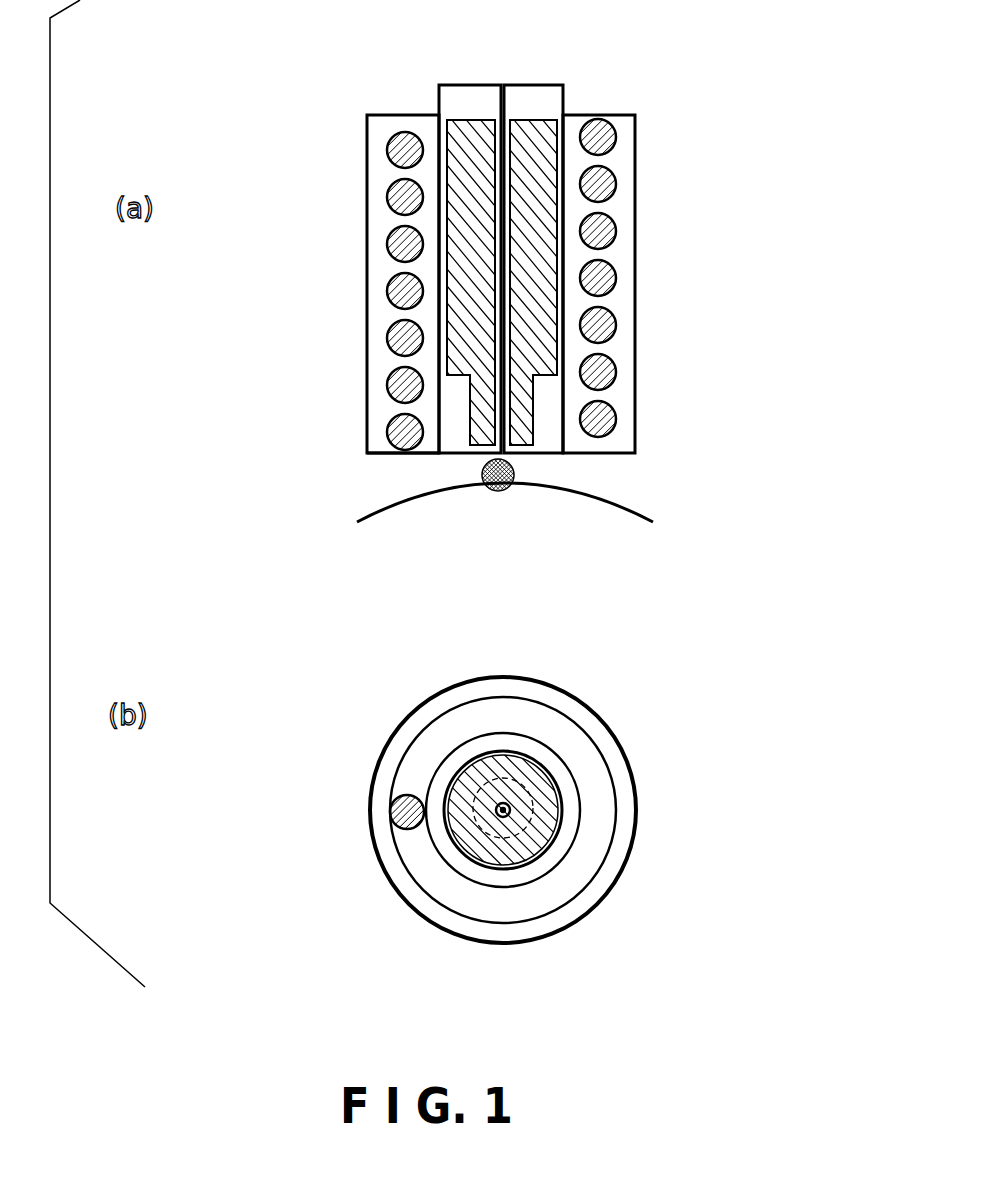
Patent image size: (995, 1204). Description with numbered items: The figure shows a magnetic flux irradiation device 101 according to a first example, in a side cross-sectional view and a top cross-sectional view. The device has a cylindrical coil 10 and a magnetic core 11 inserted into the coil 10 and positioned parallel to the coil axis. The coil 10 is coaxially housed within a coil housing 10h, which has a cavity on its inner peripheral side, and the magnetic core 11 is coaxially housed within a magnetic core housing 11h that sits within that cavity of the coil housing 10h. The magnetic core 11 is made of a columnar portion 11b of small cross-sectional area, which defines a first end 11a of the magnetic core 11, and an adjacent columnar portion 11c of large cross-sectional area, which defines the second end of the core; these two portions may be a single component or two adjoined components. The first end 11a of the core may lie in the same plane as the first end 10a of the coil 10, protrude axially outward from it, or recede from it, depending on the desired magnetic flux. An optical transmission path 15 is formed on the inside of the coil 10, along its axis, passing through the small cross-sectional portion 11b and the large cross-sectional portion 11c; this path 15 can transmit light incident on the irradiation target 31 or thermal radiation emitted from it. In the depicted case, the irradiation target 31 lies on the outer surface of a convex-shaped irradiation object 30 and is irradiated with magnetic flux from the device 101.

The magnetic flux irradiation device 101 is at (358, 25).
The coil 10 is at (598, 228).
The coil housing 10h is at (635, 157).
The first end of the coil 10a is at (383, 455).
The magnetic core 11 is at (467, 137).
The magnetic core housing 11h is at (547, 83).
The columnar portion of large cross-sectional area 11c is at (468, 180).
The columnar portion of small cross-sectional area 11b is at (487, 415).
The first end of the magnetic core 11a is at (518, 453).
The optical transmission path 15 is at (495, 272).
The irradiation object 30 is at (637, 502).
The irradiation target 31 is at (498, 483).